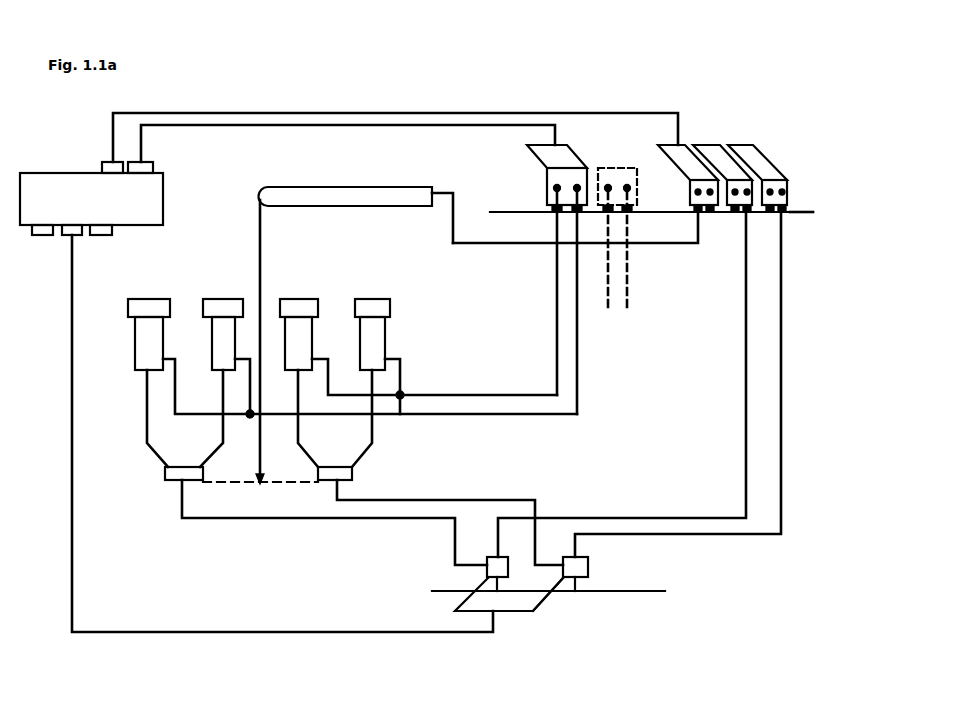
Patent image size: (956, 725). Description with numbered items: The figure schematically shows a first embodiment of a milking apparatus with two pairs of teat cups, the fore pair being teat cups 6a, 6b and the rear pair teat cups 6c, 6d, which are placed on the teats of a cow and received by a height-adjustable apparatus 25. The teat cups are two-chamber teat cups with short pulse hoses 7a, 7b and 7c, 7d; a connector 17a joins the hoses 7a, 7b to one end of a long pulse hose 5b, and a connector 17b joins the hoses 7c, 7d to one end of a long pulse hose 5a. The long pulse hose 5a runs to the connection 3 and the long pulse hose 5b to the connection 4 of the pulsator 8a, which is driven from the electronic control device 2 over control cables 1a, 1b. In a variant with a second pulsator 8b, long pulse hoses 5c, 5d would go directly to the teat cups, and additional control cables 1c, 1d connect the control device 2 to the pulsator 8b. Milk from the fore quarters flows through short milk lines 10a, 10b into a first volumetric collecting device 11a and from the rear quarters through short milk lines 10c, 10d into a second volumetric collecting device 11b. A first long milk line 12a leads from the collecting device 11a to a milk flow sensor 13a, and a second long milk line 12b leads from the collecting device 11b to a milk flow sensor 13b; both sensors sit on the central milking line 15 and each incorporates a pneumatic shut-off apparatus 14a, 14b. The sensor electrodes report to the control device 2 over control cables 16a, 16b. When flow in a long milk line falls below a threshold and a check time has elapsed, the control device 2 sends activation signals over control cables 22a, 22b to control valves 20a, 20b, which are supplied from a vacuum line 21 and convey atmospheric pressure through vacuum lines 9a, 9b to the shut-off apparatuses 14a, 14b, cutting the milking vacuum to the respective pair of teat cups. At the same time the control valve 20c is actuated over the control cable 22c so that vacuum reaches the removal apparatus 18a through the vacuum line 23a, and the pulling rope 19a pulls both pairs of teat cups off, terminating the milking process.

The electronic control device 2 is at (46, 185).
The removal apparatus 18a is at (324, 190).
The pulling rope 19a is at (262, 254).
The vacuum line 23a is at (491, 247).
The control cable 1a is at (550, 178).
The control cable 1b is at (576, 150).
The control cable 1c is at (625, 176).
The control cable 1d is at (631, 168).
The hose connection pulsator L 3 is at (552, 190).
The hose connection pulsator R 4 is at (580, 209).
The pulsator 8a is at (554, 214).
The pulsator 8b is at (626, 168).
The long pulse hose 5a is at (554, 266).
The long pulse hose 5b is at (573, 296).
The long pulse hose 5c is at (605, 252).
The long pulse hose 5d is at (628, 280).
The control cable 22c is at (680, 157).
The control cable 22a is at (712, 158).
The control cable 22b is at (758, 170).
The control valve 20c is at (685, 196).
The control valve 20a is at (733, 214).
The control valve 20b is at (784, 214).
The vacuum line 21 is at (806, 197).
The vacuum line 9a is at (622, 516).
The vacuum line 9b is at (674, 534).
The teat cup 6a is at (150, 307).
The teat cup 6b is at (228, 307).
The teat cup 6c is at (298, 307).
The teat cup 6d is at (372, 307).
The short pulse hose 7a is at (176, 388).
The short pulse hose 7b is at (255, 380).
The short pulse hose 7c is at (330, 372).
The short pulse hose 7d is at (401, 372).
The connector pulse hose 17a is at (248, 422).
The connector pulse hose 17b is at (400, 418).
The short milk line 10a is at (150, 448).
The short milk line 10b is at (218, 438).
The short milk line 10c is at (296, 434).
The short milk line 10d is at (365, 443).
The volumetric collecting device 11a is at (182, 483).
The volumetric collecting device 11b is at (326, 483).
The apparatus for receiving two pairs of teat cups 25 is at (226, 484).
The long milk line 12a is at (395, 518).
The long milk line 12b is at (470, 493).
The milk flow sensor 13a is at (485, 550).
The shut-off apparatus 14a is at (487, 560).
The milk flow sensor 13b is at (597, 563).
The shut-off apparatus 14b is at (588, 572).
The milking line 15 is at (655, 588).
The control cable 16a is at (458, 607).
The control cable 16b is at (540, 605).